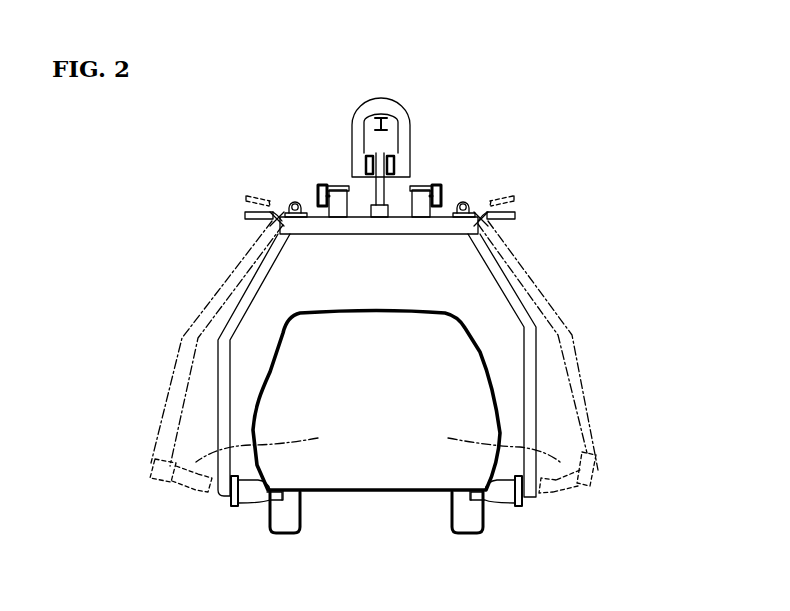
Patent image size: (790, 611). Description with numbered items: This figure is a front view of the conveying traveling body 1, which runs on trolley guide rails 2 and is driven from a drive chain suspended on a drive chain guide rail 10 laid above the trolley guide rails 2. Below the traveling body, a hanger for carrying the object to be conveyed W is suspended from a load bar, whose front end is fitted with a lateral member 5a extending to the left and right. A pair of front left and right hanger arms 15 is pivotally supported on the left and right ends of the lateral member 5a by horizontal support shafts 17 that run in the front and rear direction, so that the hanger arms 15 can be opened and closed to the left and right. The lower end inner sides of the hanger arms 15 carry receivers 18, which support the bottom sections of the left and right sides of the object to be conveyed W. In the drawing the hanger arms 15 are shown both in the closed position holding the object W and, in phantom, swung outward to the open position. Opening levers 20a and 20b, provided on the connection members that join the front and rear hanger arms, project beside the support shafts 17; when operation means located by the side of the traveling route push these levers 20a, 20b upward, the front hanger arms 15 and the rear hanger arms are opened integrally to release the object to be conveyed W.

The conveying traveling body 1 is at (379, 274).
The trolley guide rails 2 is at (362, 161).
The lateral member 5a is at (380, 235).
The drive chain guide rail 10 is at (385, 129).
The front left and right hanger arms 15 is at (218, 351).
The horizontal support shafts 17 is at (294, 201).
The receivers 18 is at (280, 491).
The opening lever 20a is at (515, 215).
The opening lever 20b is at (244, 214).
The object to be conveyed W is at (478, 343).